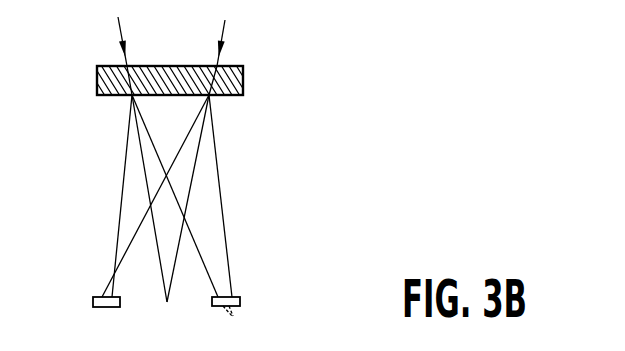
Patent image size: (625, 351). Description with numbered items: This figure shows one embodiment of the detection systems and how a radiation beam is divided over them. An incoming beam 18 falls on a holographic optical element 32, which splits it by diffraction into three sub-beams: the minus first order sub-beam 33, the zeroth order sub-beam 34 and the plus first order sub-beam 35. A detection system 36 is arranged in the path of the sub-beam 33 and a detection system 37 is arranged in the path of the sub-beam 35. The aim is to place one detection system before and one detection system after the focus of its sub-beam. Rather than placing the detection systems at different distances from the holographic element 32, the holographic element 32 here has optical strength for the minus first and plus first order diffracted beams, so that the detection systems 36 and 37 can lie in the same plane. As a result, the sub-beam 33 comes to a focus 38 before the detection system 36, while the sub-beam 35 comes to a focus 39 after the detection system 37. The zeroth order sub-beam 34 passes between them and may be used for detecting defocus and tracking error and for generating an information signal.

The incoming beam 18 is at (122, 42).
The holographic optical element 32 is at (105, 80).
The sub-beam 33 is at (122, 187).
The sub-beam 34 is at (155, 237).
The sub-beam 35 is at (225, 197).
The detection system 36 is at (93, 300).
The detection system 37 is at (240, 300).
The focus 38 is at (115, 268).
The focus 39 is at (233, 317).